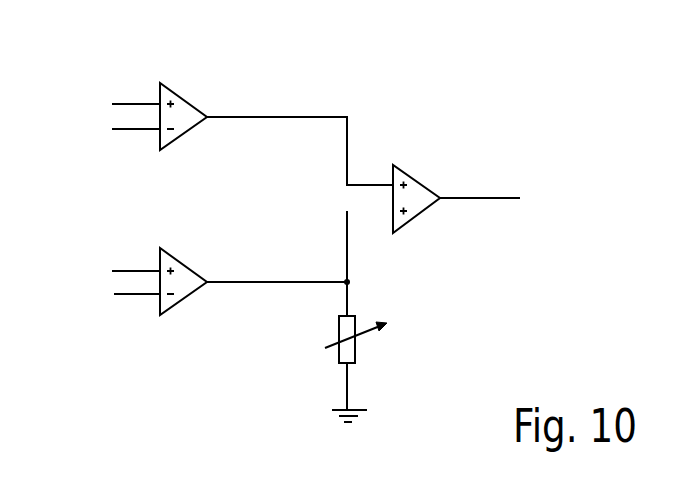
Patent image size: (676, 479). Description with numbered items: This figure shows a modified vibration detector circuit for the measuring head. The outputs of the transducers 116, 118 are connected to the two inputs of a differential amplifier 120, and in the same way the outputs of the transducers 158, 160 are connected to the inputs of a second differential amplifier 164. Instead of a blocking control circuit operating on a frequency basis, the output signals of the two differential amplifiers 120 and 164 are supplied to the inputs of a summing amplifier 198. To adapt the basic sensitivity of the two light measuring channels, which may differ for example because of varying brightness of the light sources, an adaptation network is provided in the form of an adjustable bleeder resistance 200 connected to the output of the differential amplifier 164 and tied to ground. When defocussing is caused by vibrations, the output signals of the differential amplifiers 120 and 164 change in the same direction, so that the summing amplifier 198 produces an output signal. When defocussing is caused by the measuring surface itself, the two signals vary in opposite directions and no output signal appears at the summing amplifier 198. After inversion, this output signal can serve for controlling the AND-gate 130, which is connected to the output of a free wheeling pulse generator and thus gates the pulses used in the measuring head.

The transducer 116 is at (108, 105).
The transducer 118 is at (108, 131).
The differential amplifier 120 is at (187, 112).
The AND-gate 130 is at (501, 199).
The transducer 158 is at (109, 272).
The transducer 160 is at (109, 298).
The differential amplifier 164 is at (178, 297).
The summing amplifier 198 is at (422, 195).
The adjustable bleeder resistance 200 is at (345, 348).